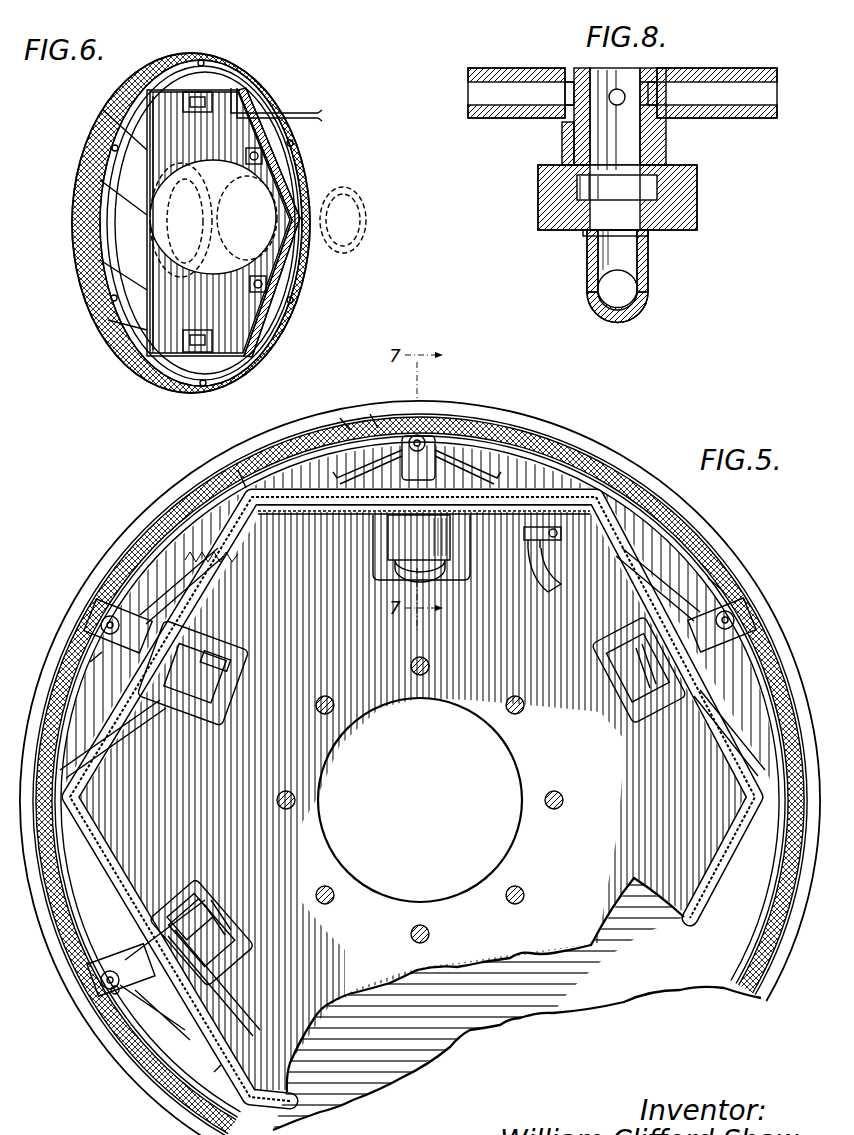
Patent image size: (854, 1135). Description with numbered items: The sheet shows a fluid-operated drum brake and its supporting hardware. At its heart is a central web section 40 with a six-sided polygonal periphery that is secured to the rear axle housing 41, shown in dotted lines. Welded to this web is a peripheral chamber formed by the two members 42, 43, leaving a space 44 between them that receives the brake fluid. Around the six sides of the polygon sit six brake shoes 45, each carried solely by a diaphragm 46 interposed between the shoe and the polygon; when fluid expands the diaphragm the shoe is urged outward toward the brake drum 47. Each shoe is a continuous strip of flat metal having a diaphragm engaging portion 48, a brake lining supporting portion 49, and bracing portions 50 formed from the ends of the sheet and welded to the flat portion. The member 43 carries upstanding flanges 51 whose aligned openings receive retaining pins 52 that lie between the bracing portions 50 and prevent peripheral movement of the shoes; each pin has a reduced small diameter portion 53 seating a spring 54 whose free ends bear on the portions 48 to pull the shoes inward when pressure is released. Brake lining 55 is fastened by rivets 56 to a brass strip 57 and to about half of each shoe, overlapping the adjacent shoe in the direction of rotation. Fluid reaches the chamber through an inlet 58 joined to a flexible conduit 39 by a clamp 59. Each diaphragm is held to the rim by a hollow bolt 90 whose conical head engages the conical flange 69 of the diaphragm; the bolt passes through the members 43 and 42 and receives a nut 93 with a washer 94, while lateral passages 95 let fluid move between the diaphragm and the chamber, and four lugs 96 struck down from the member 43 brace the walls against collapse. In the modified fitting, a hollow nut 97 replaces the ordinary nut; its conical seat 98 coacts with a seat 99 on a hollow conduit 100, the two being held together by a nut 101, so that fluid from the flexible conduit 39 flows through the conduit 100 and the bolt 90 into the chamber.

In FIG. 6, the flexible conduit 39 is at (318, 116).
In FIG. 5, the flexible conduit 39 is at (540, 578).
In FIG. 6, the central web section 40 is at (250, 322).
In FIG. 5, the central web section 40 is at (392, 700).
In FIG. 6, the rear axle housing 41 is at (320, 192).
In FIG. 5, the member 42 is at (322, 512).
In FIG. 5, the member 43 is at (278, 500).
In FIG. 8, the space 44 is at (735, 85).
In FIG. 5, the space 44 is at (357, 503).
In FIG. 6, the brake shoe 45 is at (112, 100).
In FIG. 5, the brake shoe 45 is at (511, 440).
In FIG. 5, the diaphragm 46 is at (446, 492).
In FIG. 5, the brake drum 47 is at (574, 438).
In FIG. 5, the diaphragm engaging portion 48 is at (238, 556).
In FIG. 5, the brake lining supporting portion 49 is at (108, 592).
In FIG. 5, the bracing portions 50 is at (58, 977).
In FIG. 6, the upstanding flanges 51 is at (116, 278).
In FIG. 5, the upstanding flanges 51 is at (62, 662).
In FIG. 6, the retaining pin 52 is at (296, 150).
In FIG. 5, the retaining pin 52 is at (421, 436).
In FIG. 5, the small diameter portion 53 is at (104, 990).
In FIG. 5, the spring 54 is at (168, 722).
In FIG. 5, the brake lining 55 is at (242, 468).
In FIG. 6, the rivet 56 is at (86, 205).
In FIG. 5, the rivet 56 is at (372, 416).
In FIG. 5, the strip 57 is at (138, 513).
In FIG. 5, the inlet 58 is at (527, 546).
In FIG. 5, the clamp 59 is at (524, 534).
In FIG. 5, the conical flange 69 is at (416, 740).
In FIG. 8, the hollow bolt 90 is at (666, 152).
In FIG. 5, the hollow bolt 90 is at (194, 916).
In FIG. 6, the nut 93 is at (246, 157).
In FIG. 5, the nut 93 is at (190, 690).
In FIG. 8, the washer 94 is at (560, 140).
In FIG. 5, the washer 94 is at (216, 655).
In FIG. 8, the lateral passages 95 is at (617, 90).
In FIG. 5, the lateral passages 95 is at (648, 690).
In FIG. 8, the lugs 96 is at (565, 108).
In FIG. 8, the hollow nut 97 is at (690, 180).
In FIG. 8, the conical seat 98 is at (697, 200).
In FIG. 8, the seat 99 is at (664, 232).
In FIG. 8, the hollow conduit 100 is at (587, 258).
In FIG. 8, the nut 101 is at (538, 215).